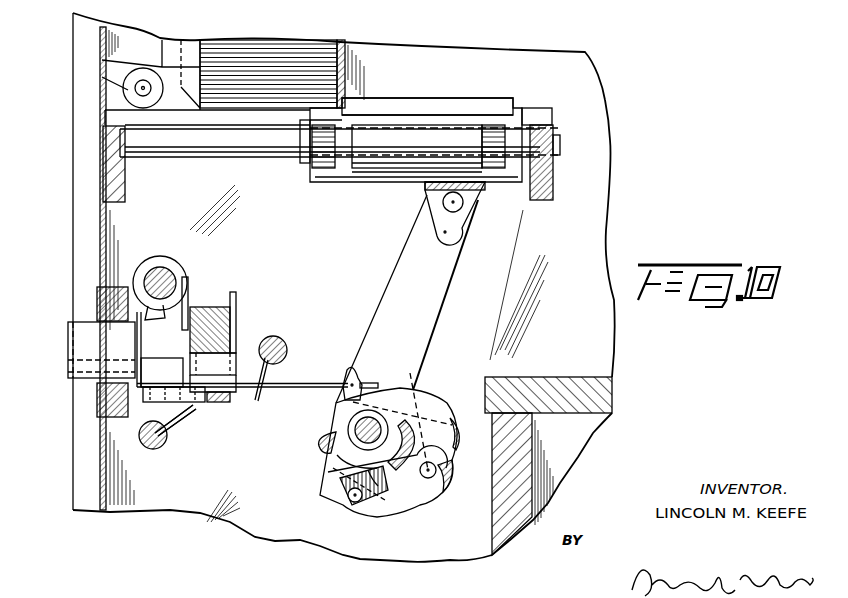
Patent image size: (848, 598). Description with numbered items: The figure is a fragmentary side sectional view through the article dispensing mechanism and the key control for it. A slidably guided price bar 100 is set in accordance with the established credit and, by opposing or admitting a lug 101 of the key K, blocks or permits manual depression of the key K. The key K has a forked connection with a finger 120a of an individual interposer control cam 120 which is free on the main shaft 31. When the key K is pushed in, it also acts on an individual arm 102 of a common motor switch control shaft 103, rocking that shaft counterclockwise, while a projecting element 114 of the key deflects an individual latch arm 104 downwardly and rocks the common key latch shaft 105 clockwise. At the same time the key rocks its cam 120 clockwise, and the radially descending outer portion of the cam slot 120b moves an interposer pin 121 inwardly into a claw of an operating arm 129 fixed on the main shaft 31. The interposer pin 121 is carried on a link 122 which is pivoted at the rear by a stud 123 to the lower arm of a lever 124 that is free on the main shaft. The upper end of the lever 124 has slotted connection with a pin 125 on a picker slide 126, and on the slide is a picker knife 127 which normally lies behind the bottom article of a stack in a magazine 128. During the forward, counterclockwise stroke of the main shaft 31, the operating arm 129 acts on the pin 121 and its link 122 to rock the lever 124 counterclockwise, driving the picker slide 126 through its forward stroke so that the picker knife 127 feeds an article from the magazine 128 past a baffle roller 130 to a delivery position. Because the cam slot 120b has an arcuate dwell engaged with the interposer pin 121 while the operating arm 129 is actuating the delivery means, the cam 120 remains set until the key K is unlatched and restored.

The main shaft 31 is at (358, 428).
The price bar 100 is at (193, 312).
The lug 101 is at (175, 367).
The arm 102 is at (270, 374).
The motor switch control shaft 103 is at (276, 338).
The latch arm 104 is at (173, 428).
The key latch shaft 105 is at (148, 448).
The projecting element 114 is at (187, 408).
The interposer control cam 120 is at (428, 398).
The finger 120a is at (351, 370).
The cam slot 120b is at (340, 497).
The interposer pin 121 is at (355, 503).
The link 122 is at (377, 470).
The stud 123 is at (428, 480).
The lever 124 is at (405, 268).
The pin 125 is at (462, 208).
The picker slide 126 is at (383, 180).
The picker knife 127 is at (426, 100).
The magazine 128 is at (333, 38).
The operating arm 129 is at (322, 440).
The baffle roller 130 is at (147, 98).
The key K is at (90, 368).